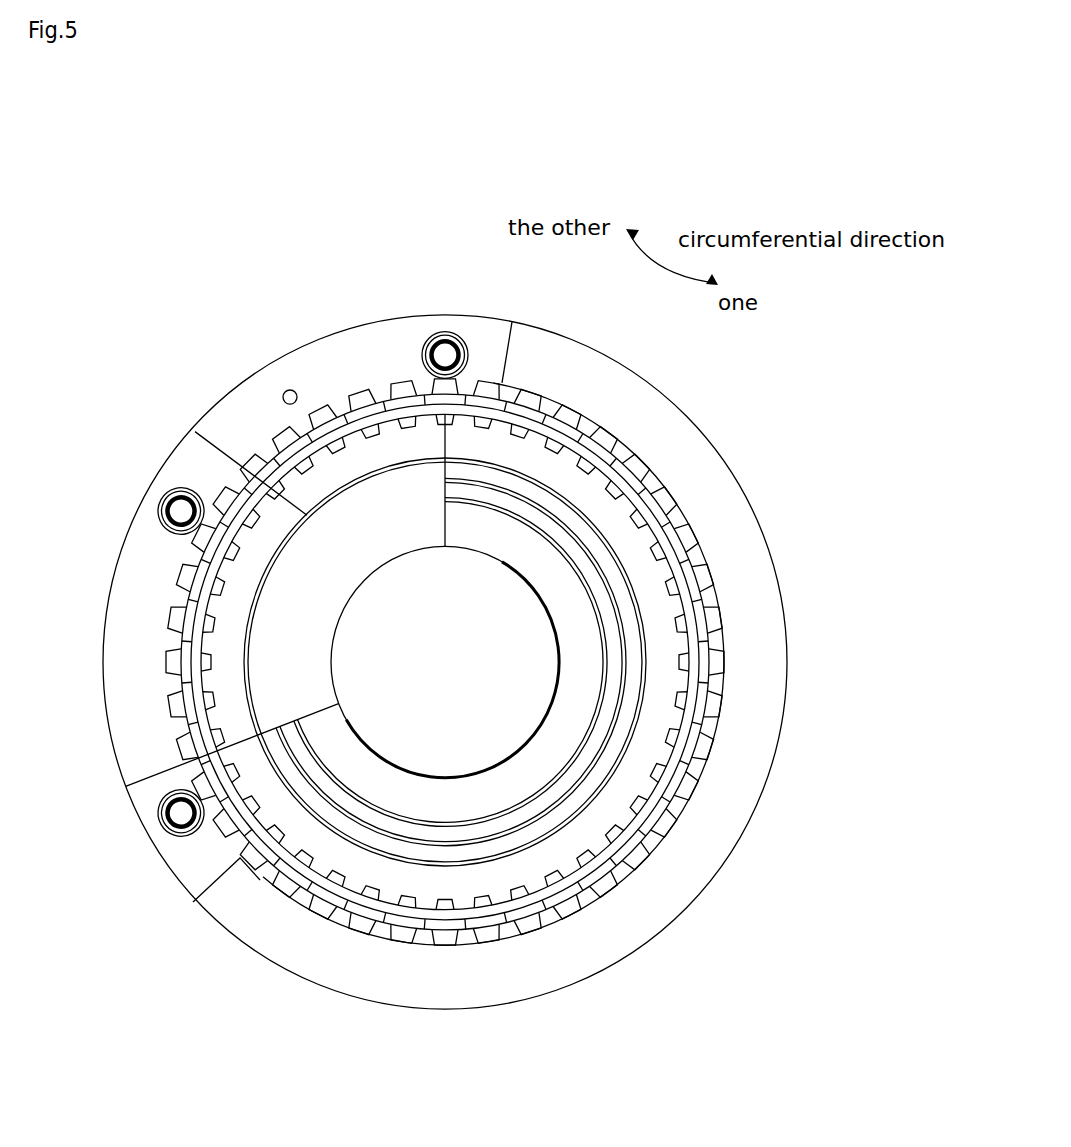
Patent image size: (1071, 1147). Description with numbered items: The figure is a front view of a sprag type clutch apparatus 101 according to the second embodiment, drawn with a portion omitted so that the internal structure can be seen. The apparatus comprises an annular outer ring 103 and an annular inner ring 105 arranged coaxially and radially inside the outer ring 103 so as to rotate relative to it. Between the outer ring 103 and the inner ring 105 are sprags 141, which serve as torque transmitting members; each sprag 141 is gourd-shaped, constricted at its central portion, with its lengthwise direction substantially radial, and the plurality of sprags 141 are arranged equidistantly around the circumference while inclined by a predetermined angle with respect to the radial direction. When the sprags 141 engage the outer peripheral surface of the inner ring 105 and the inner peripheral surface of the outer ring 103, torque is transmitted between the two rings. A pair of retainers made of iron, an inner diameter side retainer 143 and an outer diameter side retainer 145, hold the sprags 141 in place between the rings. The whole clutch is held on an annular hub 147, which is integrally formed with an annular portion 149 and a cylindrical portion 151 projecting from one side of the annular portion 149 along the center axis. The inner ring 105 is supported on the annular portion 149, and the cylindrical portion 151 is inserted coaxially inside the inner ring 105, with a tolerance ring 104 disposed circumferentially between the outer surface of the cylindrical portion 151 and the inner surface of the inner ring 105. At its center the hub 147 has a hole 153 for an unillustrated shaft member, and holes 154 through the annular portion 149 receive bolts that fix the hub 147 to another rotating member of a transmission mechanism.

The sprag type clutch apparatus 101 is at (265, 292).
The outer ring 103 is at (643, 413).
The tolerance ring 104 is at (573, 533).
The inner ring 105 is at (632, 546).
The sprags 141 is at (683, 750).
The inner diameter side retainer 143 is at (690, 683).
The outer diameter side retainer 145 is at (684, 553).
The hub 147 is at (204, 407).
The annular portion 149 is at (135, 568).
The cylindrical portion 151 is at (320, 808).
The hole 153 is at (430, 745).
The holes 154 is at (448, 340).